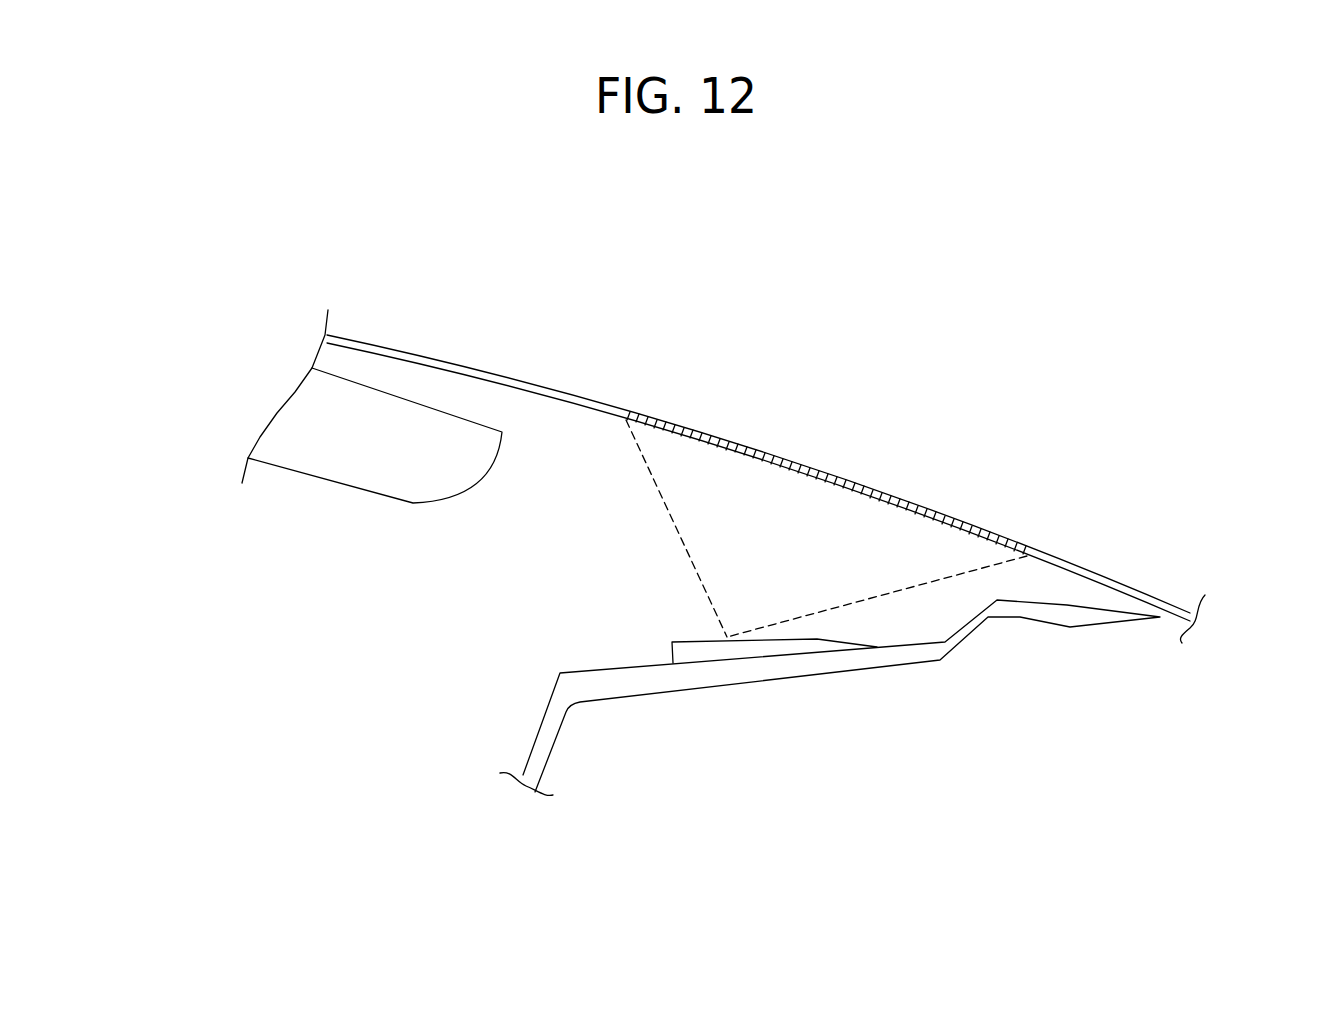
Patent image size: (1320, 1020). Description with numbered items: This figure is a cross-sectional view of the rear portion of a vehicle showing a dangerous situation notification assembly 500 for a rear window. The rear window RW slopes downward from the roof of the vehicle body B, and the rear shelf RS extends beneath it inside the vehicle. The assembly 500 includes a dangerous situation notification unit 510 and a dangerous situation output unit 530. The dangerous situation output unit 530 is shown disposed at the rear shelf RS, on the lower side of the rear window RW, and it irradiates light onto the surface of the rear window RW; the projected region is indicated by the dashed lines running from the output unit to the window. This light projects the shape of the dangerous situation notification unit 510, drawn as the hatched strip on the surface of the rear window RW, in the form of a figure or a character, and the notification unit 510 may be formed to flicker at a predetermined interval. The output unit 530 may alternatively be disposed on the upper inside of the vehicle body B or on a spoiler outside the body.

The vehicle body B is at (295, 412).
The rear window RW is at (463, 362).
The rear shelf RS is at (613, 678).
The dangerous situation notification assembly 500 is at (826, 600).
The dangerous situation notification unit 510 is at (902, 508).
The dangerous situation output unit 530 is at (774, 692).